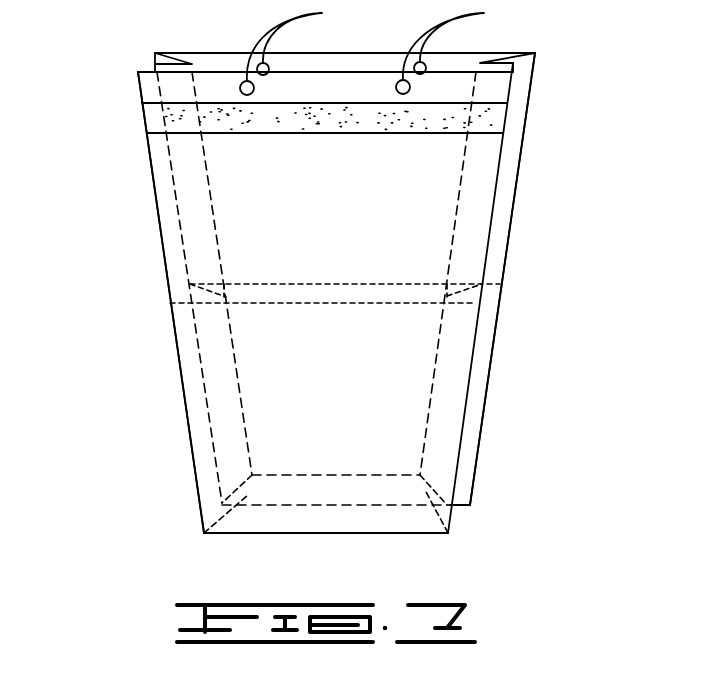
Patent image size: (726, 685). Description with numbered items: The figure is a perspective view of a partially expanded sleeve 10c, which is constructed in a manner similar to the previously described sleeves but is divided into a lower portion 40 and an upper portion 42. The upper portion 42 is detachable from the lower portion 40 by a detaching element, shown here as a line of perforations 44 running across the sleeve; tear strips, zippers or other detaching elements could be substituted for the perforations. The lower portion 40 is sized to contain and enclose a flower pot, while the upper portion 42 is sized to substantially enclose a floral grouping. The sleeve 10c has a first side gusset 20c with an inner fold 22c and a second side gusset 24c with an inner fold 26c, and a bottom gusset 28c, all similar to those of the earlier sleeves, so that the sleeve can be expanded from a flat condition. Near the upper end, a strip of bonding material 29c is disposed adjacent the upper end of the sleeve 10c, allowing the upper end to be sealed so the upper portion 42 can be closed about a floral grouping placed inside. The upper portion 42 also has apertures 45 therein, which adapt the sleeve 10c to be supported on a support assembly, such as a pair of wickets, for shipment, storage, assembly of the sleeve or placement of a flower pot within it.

The sleeve 10c is at (537, 219).
The first side gusset 20c is at (155, 62).
The inner fold 22c is at (205, 166).
The second side gusset 24c is at (520, 112).
The inner fold 26c is at (465, 167).
The bottom gusset 28c is at (455, 491).
The strip of bonding material 29c is at (485, 107).
The lower portion 40 is at (161, 369).
The upper portion 42 is at (125, 235).
The perforations 44 is at (398, 303).
The apertures 45 is at (490, 13).